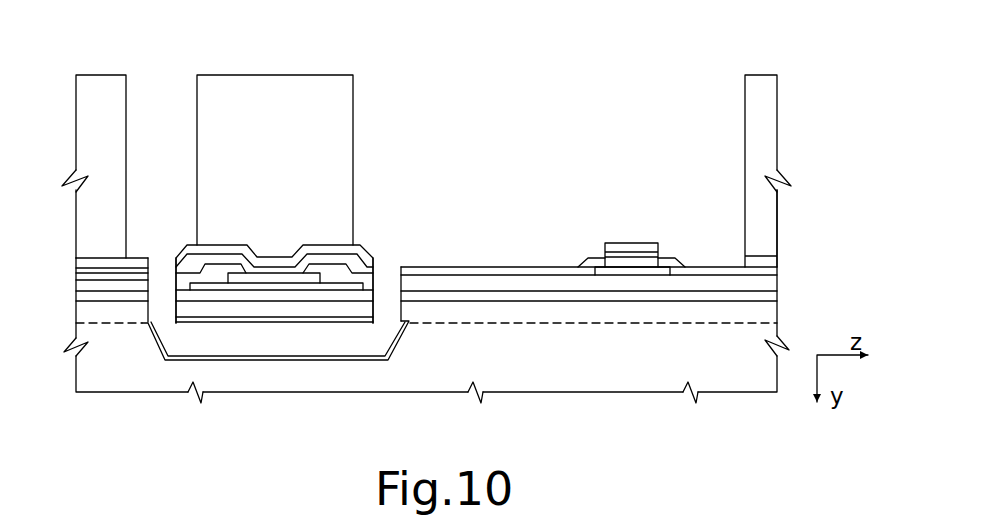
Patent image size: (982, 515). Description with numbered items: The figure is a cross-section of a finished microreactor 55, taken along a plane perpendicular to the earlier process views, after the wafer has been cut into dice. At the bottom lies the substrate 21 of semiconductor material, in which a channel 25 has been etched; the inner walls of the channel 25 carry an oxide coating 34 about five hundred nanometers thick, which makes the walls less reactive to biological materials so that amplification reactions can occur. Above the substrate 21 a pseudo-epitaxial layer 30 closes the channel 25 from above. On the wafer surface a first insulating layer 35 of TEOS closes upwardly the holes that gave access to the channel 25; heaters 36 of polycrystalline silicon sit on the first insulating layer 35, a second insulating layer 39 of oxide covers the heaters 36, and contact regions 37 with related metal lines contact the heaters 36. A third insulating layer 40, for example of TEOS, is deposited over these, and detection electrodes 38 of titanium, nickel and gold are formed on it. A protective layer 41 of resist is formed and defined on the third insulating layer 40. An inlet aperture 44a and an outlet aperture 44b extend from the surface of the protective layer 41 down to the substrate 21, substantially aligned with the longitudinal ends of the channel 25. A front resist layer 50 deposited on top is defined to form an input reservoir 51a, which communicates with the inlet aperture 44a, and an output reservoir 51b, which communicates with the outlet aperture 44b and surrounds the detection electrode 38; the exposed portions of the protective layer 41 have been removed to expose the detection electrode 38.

The substrate 21 is at (468, 375).
The channel 25 is at (283, 351).
The pseudo-epitaxial layer 30 is at (330, 308).
The oxide coating 34 is at (205, 360).
The first insulating layer 35 is at (174, 324).
The heater 36 is at (288, 288).
The contact region 37 is at (207, 273).
The detection electrode 38 is at (630, 243).
The second insulating layer 39 is at (273, 278).
The third insulating layer 40 is at (260, 272).
The protective layer 41 is at (230, 252).
The inlet aperture 44a is at (158, 255).
The outlet aperture 44b is at (386, 264).
The front resist layer 50 is at (113, 82).
The input reservoir 51a is at (163, 100).
The output reservoir 51b is at (595, 138).
The microreactor 55 is at (652, 80).